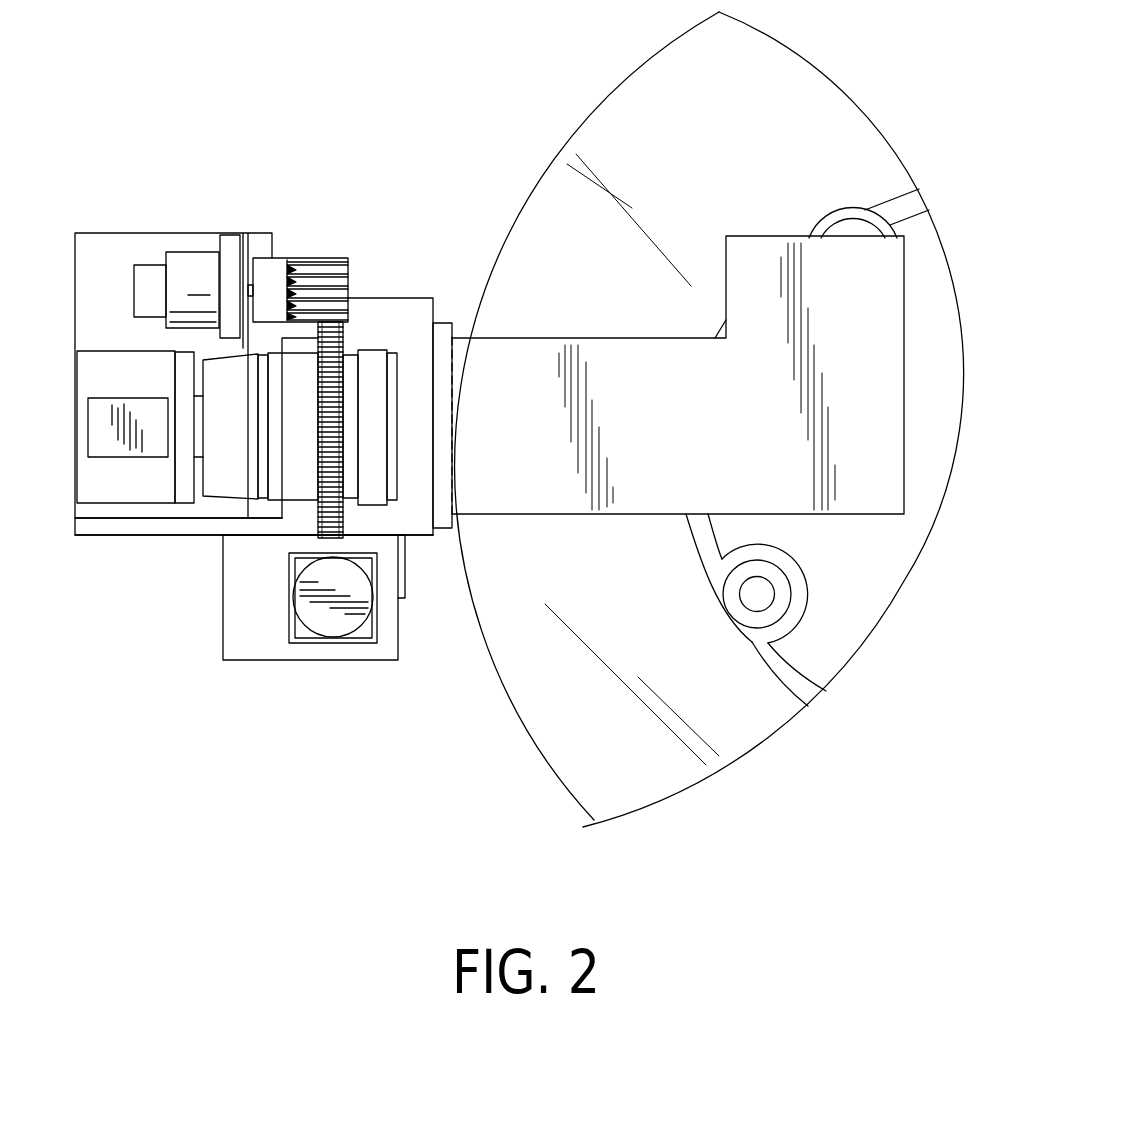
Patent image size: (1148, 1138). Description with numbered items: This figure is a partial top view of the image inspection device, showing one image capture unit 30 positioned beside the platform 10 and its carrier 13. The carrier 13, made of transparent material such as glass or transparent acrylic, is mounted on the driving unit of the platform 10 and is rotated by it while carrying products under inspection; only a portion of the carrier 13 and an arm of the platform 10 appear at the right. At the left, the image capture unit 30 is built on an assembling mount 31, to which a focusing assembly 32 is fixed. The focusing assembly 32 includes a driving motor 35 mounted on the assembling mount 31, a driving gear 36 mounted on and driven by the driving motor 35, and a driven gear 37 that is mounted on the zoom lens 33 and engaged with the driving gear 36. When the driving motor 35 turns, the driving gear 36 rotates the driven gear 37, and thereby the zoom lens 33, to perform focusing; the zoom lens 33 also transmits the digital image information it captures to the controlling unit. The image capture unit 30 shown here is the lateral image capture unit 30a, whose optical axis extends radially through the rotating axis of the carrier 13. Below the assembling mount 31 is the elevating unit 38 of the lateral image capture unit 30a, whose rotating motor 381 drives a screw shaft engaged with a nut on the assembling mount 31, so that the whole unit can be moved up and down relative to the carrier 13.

The platform 10 is at (574, 110).
The carrier 13 is at (677, 85).
The image capture unit 30 is at (117, 222).
The lateral image capture unit 30a is at (183, 562).
The assembling mount 31 is at (365, 312).
The focusing assembly 32 is at (214, 224).
The zoom lens 33 is at (375, 367).
The driving motor 35 is at (203, 275).
The driving gear 36 is at (323, 265).
The driven gear 37 is at (314, 526).
The elevating unit 38 is at (331, 676).
The rotating motor 381 is at (342, 618).